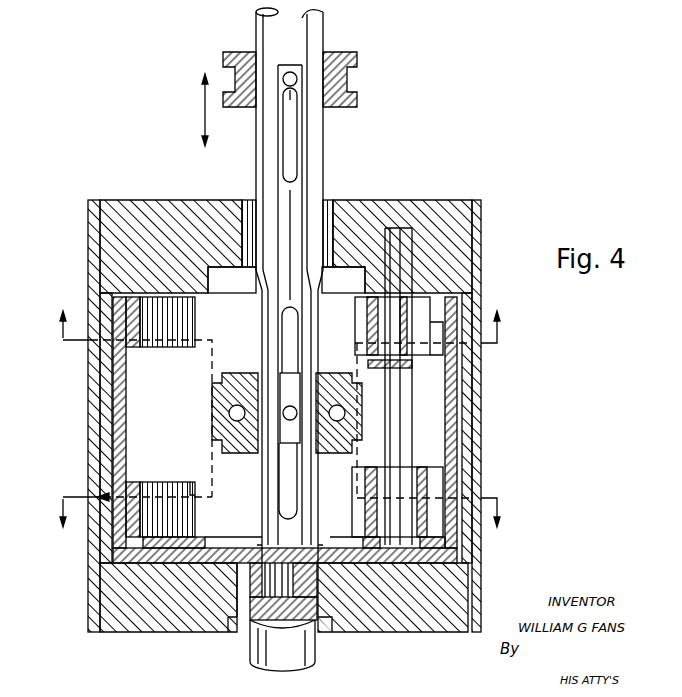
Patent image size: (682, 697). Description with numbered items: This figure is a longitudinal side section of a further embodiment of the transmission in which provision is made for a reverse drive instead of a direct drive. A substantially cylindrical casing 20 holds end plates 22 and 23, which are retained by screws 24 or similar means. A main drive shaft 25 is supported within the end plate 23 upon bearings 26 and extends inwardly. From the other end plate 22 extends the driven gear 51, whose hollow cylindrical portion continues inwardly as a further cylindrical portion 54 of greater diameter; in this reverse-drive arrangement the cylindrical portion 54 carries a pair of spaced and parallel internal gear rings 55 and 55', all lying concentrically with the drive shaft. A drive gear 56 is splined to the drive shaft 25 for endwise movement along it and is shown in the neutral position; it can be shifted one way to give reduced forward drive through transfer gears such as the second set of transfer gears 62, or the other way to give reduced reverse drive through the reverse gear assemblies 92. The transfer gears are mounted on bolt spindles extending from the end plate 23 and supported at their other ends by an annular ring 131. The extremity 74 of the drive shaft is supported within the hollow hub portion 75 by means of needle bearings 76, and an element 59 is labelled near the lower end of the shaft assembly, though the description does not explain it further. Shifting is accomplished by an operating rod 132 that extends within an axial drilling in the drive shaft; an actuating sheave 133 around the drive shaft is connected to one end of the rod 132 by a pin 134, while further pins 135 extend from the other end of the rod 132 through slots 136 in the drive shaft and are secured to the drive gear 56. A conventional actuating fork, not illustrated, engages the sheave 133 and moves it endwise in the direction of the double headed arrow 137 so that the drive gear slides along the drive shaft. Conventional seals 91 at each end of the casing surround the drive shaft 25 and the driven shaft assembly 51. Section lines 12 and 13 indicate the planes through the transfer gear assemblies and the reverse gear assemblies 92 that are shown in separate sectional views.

The section line of transfer gear assemblies 12 is at (281, 522).
The section line of reverse gear assemblies 13 is at (281, 394).
The casing 20 is at (480, 384).
The end plate 22 is at (172, 612).
The end plate 23 is at (150, 200).
The screws 24 is at (92, 243).
The main drive shaft 25 is at (289, 246).
The bearings 26 is at (248, 200).
The driven gear 51 is at (270, 637).
The cylindrical portion 54 is at (455, 415).
The internal gear ring 55 is at (315, 422).
The internal gear ring 55' is at (440, 335).
The drive gear 56 is at (228, 410).
The coupling 59 is at (230, 612).
The transfer gears 62 is at (405, 370).
The extremity of second portion of drive shaft 74 is at (322, 545).
The hollow hub portion 75 is at (248, 578).
The needle bearings 76 is at (258, 555).
The seals 91 is at (332, 200).
The reverse gear assemblies 92 is at (392, 447).
The annular ring 131 is at (292, 40).
The operating rod 132 is at (288, 352).
The actuating sheave 133 is at (223, 55).
The pin 134 is at (292, 142).
The pins 135 is at (288, 432).
The slots 136 is at (297, 452).
The double headed arrow 137 is at (205, 104).